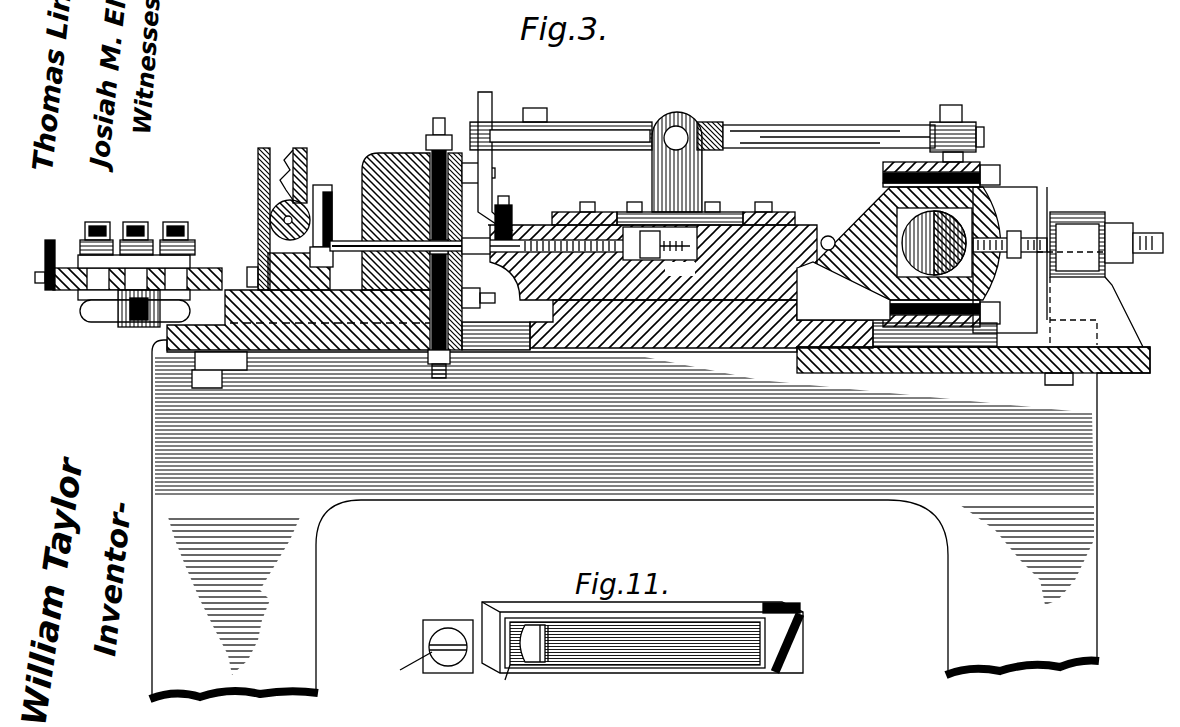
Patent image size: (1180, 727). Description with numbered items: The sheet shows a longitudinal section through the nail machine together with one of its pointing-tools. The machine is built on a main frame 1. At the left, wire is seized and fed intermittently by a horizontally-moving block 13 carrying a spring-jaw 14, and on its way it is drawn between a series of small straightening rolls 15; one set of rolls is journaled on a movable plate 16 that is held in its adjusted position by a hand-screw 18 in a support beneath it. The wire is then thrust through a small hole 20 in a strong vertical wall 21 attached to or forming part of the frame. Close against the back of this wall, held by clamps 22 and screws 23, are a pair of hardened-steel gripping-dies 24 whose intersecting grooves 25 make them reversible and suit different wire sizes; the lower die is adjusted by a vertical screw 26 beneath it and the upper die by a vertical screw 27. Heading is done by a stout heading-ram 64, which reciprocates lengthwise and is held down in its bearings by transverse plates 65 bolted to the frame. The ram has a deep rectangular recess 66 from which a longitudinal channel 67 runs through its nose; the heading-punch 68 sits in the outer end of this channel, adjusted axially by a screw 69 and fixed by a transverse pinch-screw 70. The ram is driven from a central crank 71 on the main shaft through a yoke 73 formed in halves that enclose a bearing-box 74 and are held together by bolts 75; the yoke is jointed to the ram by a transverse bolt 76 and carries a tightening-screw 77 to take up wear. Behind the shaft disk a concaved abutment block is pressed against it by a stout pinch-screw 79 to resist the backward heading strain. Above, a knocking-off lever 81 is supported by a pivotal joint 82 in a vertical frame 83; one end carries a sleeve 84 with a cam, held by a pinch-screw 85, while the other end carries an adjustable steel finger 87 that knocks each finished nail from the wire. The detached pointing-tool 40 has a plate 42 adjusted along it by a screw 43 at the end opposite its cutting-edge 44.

In FIG. 3, the main frame 1 is at (650, 519).
In FIG. 3, the horizontally-moving block 13 is at (333, 259).
In FIG. 3, the spring-jaw 14 is at (334, 216).
In FIG. 3, the straightening rolls 15 is at (178, 212).
In FIG. 3, the movable plate 16 is at (193, 266).
In FIG. 3, the hand-screw 18 is at (134, 316).
In FIG. 3, the hole 20 is at (397, 239).
In FIG. 3, the vertical wall 21 is at (396, 213).
In FIG. 3, the clamps 22 is at (489, 251).
In FIG. 3, the screws 23 is at (484, 174).
In FIG. 3, the gripping-dies 24 is at (450, 262).
In FIG. 3, the grooves 25 is at (426, 147).
In FIG. 3, the vertical screw 26 is at (449, 366).
In FIG. 3, the vertical screw 27 is at (437, 226).
In FIG. 3, the heading-ram 64 is at (897, 304).
In FIG. 3, the transverse plates 65 is at (812, 197).
In FIG. 3, the rectangular recess 66 is at (680, 271).
In FIG. 3, the longitudinal channel 67 is at (562, 262).
In FIG. 3, the heading-punch 68 is at (476, 246).
In FIG. 3, the screw 69 is at (660, 243).
In FIG. 3, the pinch-screw 70 is at (513, 217).
In FIG. 3, the crank 71 is at (934, 242).
In FIG. 3, the yoke 73 is at (907, 243).
In FIG. 3, the bearing-box 74 is at (990, 282).
In FIG. 3, the bolts 75 is at (1037, 167).
In FIG. 3, the transverse bolt 76 is at (828, 236).
In FIG. 3, the tightening-screw 77 is at (1022, 240).
In FIG. 3, the pinch-screw 79 is at (1134, 252).
In FIG. 3, the knocking-off lever 81 is at (702, 129).
In FIG. 3, the pivotal joint 82 is at (677, 155).
In FIG. 3, the vertical frame 83 is at (677, 185).
In FIG. 3, the sleeve 84 is at (972, 128).
In FIG. 3, the pinch-screw 85 is at (951, 103).
In FIG. 3, the steel finger 87 is at (494, 157).
In FIG. 11, the pointing-tool 40 is at (536, 638).
In FIG. 11, the plate 42 is at (690, 606).
In FIG. 11, the screw 43 is at (448, 676).
In FIG. 11, the cutting-edge 44 is at (795, 637).